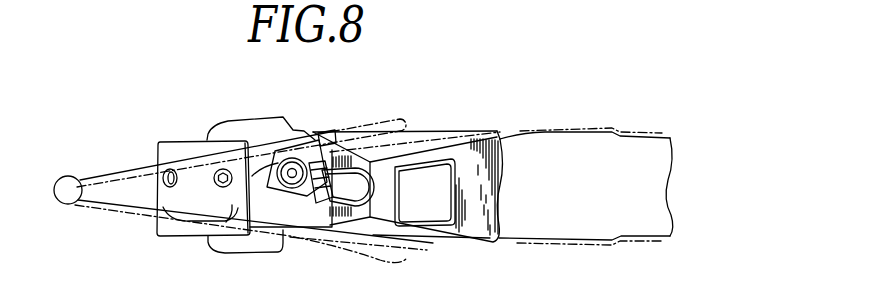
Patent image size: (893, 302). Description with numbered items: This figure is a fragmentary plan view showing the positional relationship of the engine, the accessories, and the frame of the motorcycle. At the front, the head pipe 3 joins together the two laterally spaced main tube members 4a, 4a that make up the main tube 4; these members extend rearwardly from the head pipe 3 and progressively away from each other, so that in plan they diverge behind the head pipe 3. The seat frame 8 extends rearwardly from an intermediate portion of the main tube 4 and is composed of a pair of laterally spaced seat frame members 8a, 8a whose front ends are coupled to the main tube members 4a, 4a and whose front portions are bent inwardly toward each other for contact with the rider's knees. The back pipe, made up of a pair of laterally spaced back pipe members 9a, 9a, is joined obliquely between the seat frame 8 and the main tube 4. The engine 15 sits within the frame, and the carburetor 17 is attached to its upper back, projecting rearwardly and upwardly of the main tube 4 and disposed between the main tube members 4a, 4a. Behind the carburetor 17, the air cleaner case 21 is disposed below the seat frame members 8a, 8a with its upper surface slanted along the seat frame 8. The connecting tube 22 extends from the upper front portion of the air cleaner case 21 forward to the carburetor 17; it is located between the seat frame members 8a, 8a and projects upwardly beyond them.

The head pipe 3 is at (70, 199).
The main tube 4 is at (144, 166).
The main tube members 4a is at (97, 175).
The seat frame 8 is at (571, 132).
The seat frame members 8a is at (540, 132).
The back pipe members 9a is at (423, 132).
The engine 15 is at (195, 207).
The carburetor 17 is at (288, 192).
The air cleaner case 21 is at (489, 226).
The connecting tube 22 is at (347, 177).